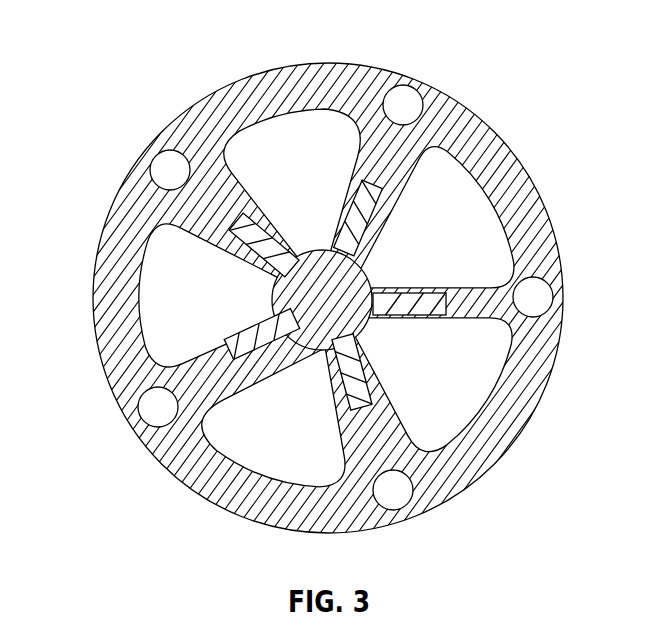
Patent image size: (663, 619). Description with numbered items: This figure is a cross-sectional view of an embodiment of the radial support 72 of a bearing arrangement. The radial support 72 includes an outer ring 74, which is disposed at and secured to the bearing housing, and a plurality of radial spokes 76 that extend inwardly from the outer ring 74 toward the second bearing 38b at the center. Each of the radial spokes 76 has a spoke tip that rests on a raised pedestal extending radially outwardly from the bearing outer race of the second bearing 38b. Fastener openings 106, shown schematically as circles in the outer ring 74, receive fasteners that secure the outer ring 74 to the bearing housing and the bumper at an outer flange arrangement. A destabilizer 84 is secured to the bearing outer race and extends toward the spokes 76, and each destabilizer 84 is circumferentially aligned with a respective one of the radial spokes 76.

The radial support 72 is at (92, 53).
The outer ring 74 is at (472, 115).
The radial spokes 76 is at (198, 382).
The second bearing 38b is at (360, 288).
The destabilizer 84 is at (242, 225).
The fastener openings 106 is at (405, 86).